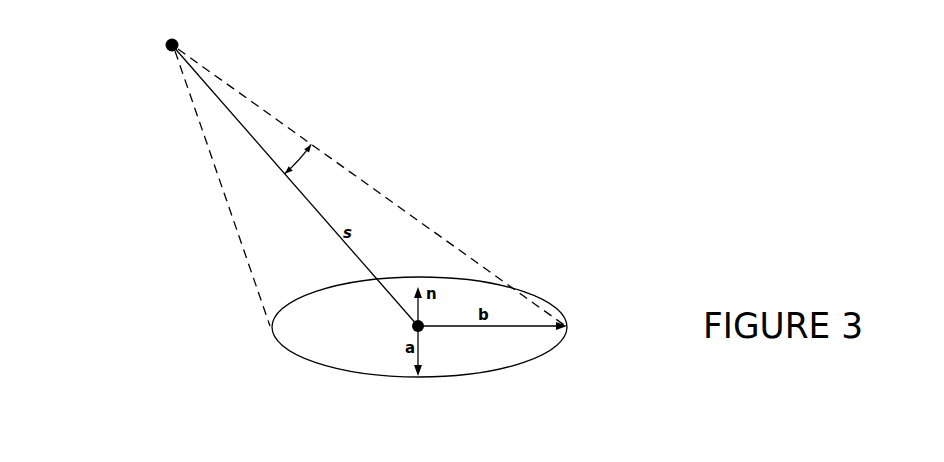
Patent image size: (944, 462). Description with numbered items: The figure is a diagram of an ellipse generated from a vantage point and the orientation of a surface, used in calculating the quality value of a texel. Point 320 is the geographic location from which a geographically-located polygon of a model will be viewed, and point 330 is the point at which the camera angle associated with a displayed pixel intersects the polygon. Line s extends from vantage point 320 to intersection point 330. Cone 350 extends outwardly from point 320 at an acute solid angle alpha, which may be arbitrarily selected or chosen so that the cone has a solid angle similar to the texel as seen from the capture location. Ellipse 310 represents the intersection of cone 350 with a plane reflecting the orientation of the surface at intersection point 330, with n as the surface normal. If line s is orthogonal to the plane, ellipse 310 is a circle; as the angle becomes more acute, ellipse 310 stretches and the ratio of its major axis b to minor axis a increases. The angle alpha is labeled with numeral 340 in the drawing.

The ellipse 310 is at (297, 352).
The vantage point 320 is at (165, 46).
The intersection point 330 is at (414, 328).
The angle alpha between vector s and boundary 340 is at (300, 168).
The cone 350 is at (243, 249).